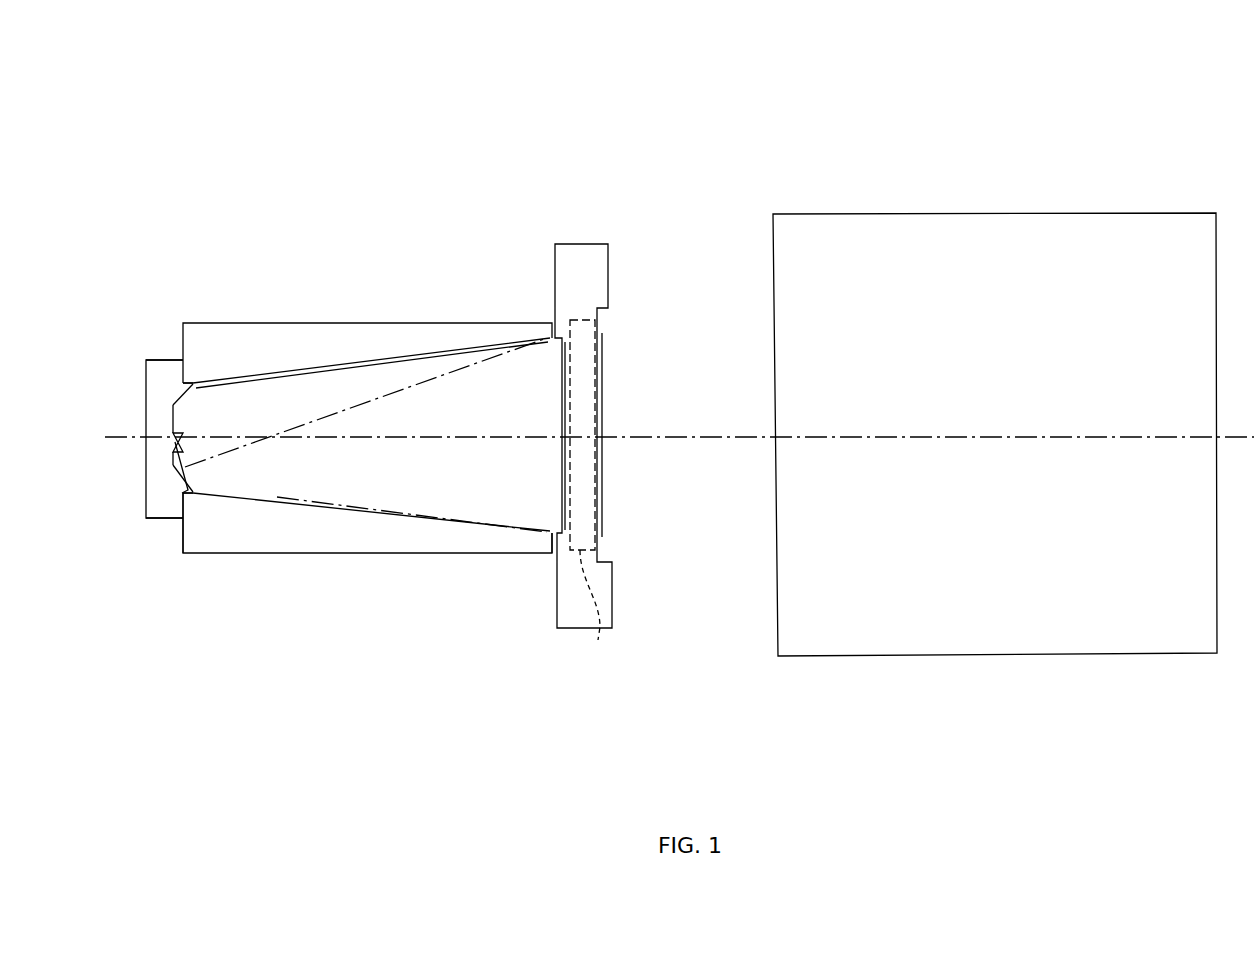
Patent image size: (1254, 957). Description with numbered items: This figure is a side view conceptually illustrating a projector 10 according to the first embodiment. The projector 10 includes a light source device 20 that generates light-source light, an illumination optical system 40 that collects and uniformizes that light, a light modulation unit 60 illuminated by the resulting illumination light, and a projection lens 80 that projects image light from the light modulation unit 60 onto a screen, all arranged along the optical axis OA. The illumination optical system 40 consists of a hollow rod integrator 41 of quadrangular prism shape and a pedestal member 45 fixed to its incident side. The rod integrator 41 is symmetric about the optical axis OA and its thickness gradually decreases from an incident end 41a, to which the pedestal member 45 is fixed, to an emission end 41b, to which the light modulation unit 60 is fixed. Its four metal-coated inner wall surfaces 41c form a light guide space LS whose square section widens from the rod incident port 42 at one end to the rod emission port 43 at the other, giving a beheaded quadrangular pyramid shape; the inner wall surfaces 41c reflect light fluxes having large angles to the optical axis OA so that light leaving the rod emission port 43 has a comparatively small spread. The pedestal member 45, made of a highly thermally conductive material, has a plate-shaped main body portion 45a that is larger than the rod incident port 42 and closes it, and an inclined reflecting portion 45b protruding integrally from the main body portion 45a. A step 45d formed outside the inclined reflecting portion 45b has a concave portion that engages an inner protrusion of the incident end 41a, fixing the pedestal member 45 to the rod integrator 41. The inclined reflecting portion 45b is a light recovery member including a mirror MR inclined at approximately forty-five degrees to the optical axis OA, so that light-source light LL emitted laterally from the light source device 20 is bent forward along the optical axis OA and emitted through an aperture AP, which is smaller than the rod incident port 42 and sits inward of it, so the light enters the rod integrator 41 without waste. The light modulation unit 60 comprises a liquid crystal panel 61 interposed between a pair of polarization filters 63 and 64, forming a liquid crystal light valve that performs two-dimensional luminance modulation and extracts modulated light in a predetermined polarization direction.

The projector 10 is at (1147, 77).
The projection lens 80 is at (957, 213).
The optical axis OA is at (703, 450).
The illumination optical system 40 is at (400, 303).
The rod integrator 41 is at (322, 325).
The incident end 41a is at (198, 525).
The emission end 41b is at (523, 560).
The inner wall surfaces 41c is at (395, 372).
The rod incident port 42 is at (198, 402).
The rod emission port 43 is at (547, 357).
The light source device 20 is at (197, 430).
The light guide space LS is at (427, 487).
The light-source light LL is at (277, 497).
The pedestal member 45 is at (158, 520).
The main body portion 45a is at (188, 390).
The inclined reflecting portion 45b is at (180, 402).
The step 45d is at (180, 380).
The mirror MR is at (175, 418).
The aperture AP is at (205, 500).
The light modulation unit 60 is at (590, 272).
The liquid crystal panel 61 is at (595, 607).
The polarization filter 63 is at (560, 480).
The polarization filter 64 is at (603, 535).